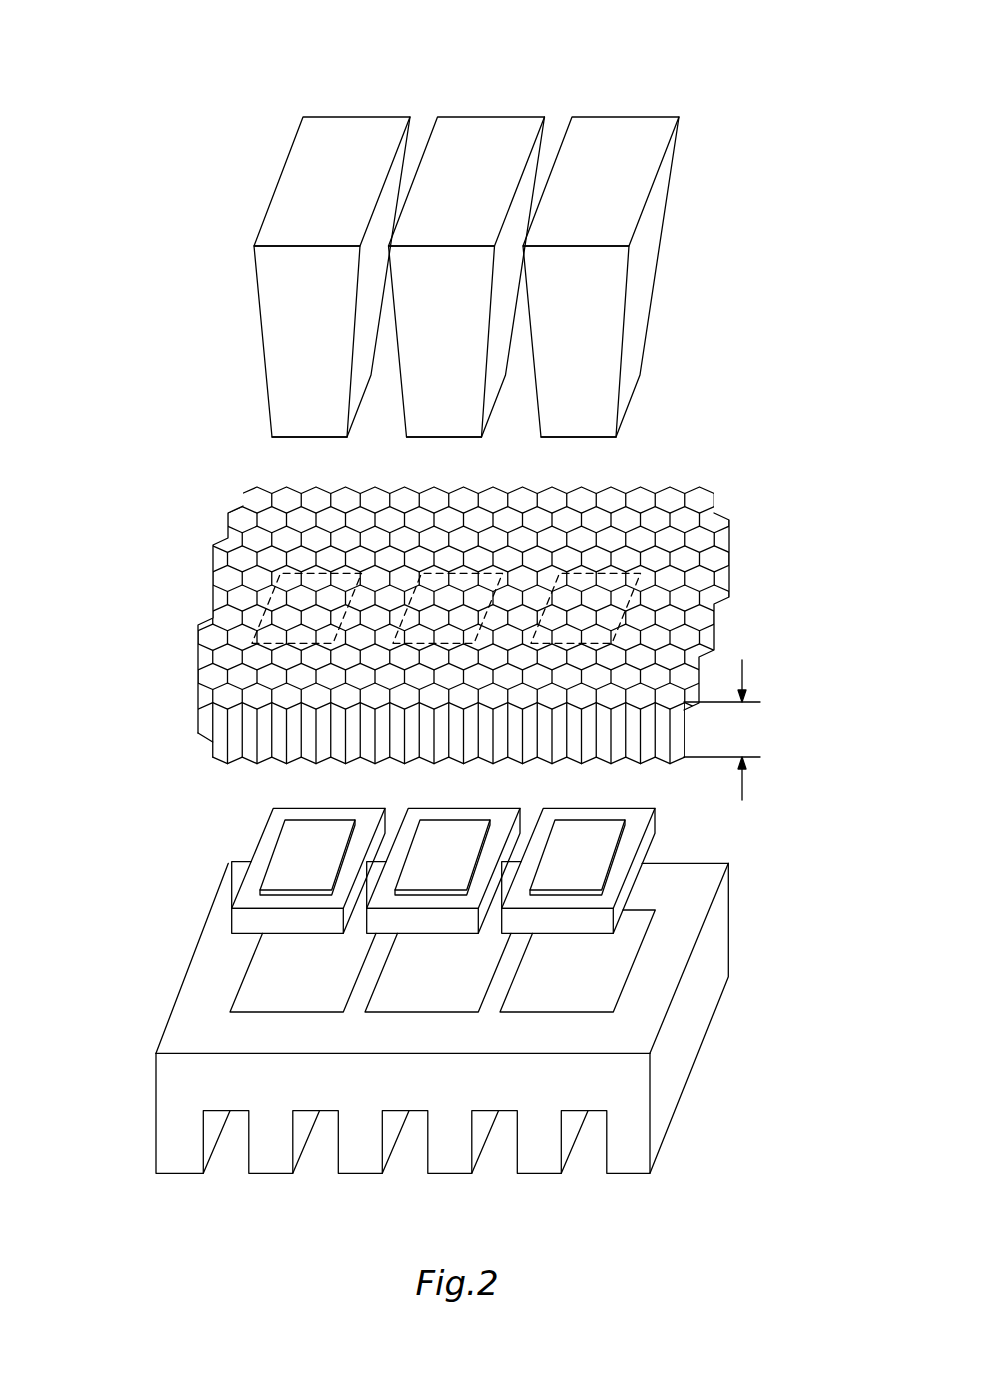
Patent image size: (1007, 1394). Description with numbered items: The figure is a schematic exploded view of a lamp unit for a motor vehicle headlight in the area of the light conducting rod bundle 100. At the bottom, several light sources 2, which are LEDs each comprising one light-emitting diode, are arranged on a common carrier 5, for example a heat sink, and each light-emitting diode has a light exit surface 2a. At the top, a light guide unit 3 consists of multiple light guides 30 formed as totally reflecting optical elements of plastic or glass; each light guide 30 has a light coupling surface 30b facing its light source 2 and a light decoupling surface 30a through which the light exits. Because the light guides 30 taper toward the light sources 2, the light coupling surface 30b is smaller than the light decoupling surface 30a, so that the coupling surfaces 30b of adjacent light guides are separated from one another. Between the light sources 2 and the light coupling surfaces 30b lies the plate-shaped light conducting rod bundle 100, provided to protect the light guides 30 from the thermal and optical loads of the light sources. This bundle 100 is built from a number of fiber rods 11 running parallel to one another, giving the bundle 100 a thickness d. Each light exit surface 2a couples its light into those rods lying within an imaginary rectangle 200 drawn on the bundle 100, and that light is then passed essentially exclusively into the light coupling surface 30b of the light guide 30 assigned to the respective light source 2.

The light guide unit 3 is at (693, 355).
The light guide 30 is at (430, 327).
The light decoupling surface 30a is at (327, 217).
The light coupling surface 30b is at (290, 460).
The light conducting rod bundle 100 is at (158, 522).
The fiber rod 11 is at (228, 578).
The rectangle 200 is at (393, 643).
The light source 2 is at (648, 843).
The light exit surface 2a is at (305, 867).
The carrier 5 is at (275, 1100).